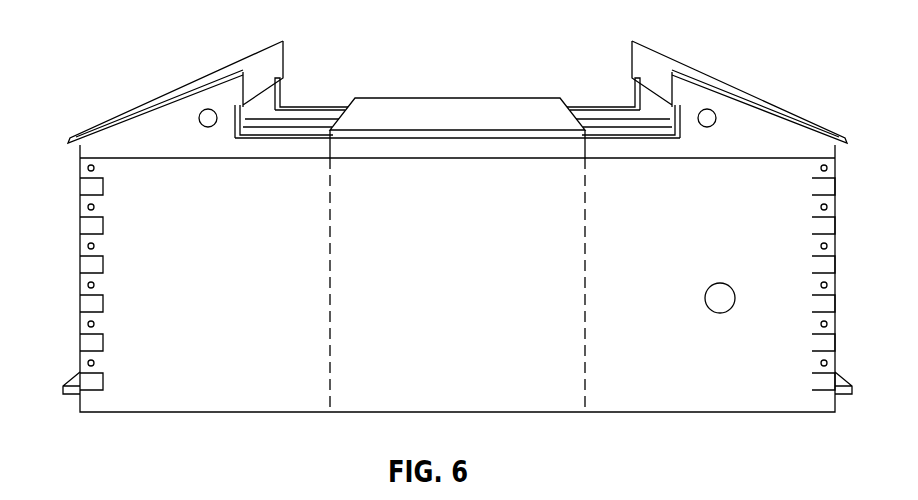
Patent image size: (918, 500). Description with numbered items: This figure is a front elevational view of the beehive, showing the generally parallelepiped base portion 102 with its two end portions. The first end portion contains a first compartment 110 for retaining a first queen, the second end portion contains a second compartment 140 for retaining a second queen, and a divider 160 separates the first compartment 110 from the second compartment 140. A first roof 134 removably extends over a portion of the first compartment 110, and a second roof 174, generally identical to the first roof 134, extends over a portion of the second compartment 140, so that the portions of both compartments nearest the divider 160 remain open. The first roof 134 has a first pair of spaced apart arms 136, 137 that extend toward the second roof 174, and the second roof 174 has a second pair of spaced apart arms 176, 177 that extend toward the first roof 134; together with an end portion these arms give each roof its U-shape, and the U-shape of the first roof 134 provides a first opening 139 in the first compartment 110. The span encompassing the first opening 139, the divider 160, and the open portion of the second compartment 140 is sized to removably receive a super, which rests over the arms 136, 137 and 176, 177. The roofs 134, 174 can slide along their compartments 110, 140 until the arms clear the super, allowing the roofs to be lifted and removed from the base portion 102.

The base portion 102 is at (88, 285).
The first compartment 110 is at (113, 202).
The second compartment 140 is at (797, 332).
The first roof 134 is at (128, 112).
The first opening 139 is at (287, 125).
The arm of first roof 137 is at (307, 110).
The arm of first roof 136 is at (252, 147).
The divider 160 is at (437, 110).
The second roof 174 is at (805, 143).
The arm of second roof 176 is at (622, 118).
The arm of second roof 177 is at (603, 150).